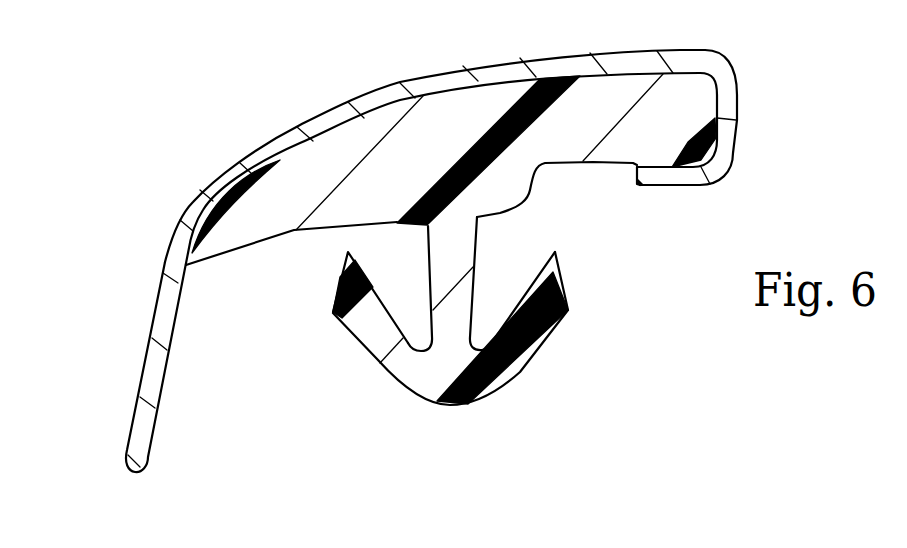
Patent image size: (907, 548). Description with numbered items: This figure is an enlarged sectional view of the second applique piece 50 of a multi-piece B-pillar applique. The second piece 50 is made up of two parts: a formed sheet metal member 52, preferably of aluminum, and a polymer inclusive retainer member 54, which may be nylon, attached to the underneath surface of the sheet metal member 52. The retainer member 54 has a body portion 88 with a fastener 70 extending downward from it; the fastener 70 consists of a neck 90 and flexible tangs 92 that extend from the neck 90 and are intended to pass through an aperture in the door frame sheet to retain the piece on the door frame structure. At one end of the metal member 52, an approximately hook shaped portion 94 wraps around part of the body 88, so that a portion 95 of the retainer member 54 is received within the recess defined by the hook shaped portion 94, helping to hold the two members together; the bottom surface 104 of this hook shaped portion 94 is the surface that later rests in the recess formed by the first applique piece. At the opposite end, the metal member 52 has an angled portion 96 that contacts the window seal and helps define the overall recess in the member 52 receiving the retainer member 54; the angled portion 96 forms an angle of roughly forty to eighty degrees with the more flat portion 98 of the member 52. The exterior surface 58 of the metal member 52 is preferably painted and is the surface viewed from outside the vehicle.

The second applique piece 50 is at (222, 126).
The formed sheet metal member 52 is at (483, 70).
The polymer inclusive retainer member 54 is at (510, 187).
The exterior surface 58 is at (358, 97).
The fastener 70 is at (413, 385).
The body portion 88 is at (243, 215).
The neck 90 is at (440, 250).
The flexible tangs 92 is at (362, 326).
The hook shaped portion 94 is at (720, 147).
The portion of retainer member 95 is at (685, 131).
The angled portion 96 is at (152, 373).
The flat portion 98 is at (292, 140).
The bottom surface 104 is at (673, 186).